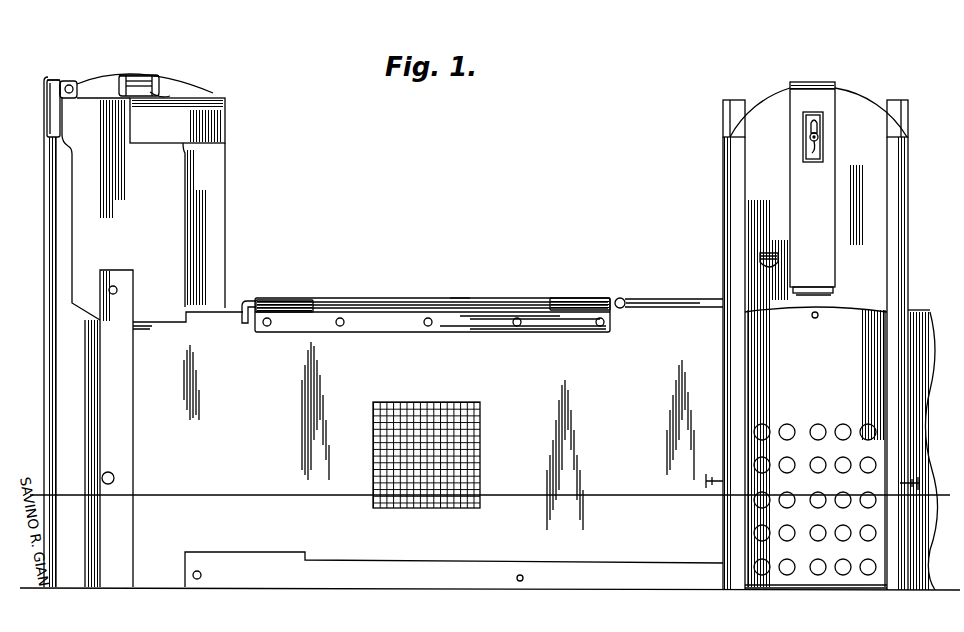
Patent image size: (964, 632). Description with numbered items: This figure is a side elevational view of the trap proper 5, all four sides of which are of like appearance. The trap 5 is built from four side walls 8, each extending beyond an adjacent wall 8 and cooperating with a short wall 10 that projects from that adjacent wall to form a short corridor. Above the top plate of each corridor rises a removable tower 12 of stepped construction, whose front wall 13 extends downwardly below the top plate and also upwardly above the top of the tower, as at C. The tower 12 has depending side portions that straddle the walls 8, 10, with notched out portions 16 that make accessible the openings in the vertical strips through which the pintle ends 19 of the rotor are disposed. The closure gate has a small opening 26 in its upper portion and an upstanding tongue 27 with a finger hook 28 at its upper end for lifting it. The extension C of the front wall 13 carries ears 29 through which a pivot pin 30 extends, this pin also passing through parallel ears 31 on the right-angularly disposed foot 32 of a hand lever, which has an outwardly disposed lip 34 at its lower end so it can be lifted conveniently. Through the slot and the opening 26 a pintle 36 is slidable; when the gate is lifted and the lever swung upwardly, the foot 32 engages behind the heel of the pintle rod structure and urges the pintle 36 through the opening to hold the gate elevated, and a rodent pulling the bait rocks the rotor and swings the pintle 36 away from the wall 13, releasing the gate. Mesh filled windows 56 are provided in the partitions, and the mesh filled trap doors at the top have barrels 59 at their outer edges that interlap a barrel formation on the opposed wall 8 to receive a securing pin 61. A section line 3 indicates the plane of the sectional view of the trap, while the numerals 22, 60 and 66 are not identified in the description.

The section line 3- 3 is at (42, 499).
The trap proper 5 is at (463, 290).
The side wall 8 is at (452, 545).
The short wall 10 is at (148, 588).
The tower 12 is at (213, 131).
The front wall 13 is at (767, 96).
The notched out portion 16 is at (130, 322).
The pintle end 19 is at (118, 290).
The side wall 22 is at (52, 410).
The small opening 26 is at (816, 143).
The upstanding tongue 27 is at (765, 284).
The finger hook 28 is at (787, 243).
The ear 29 is at (172, 97).
The pivot pin 30 is at (79, 88).
The parallel ear 31 is at (72, 79).
The foot 32 is at (55, 78).
The lip 34 is at (44, 286).
The pintle 36 is at (818, 136).
The mesh filled window 56 is at (460, 403).
The barrel 59 is at (297, 300).
The bar 60 is at (393, 298).
The securing pin 61 is at (250, 297).
The fastening bolt 66 is at (114, 478).
The upward extension C is at (52, 116).